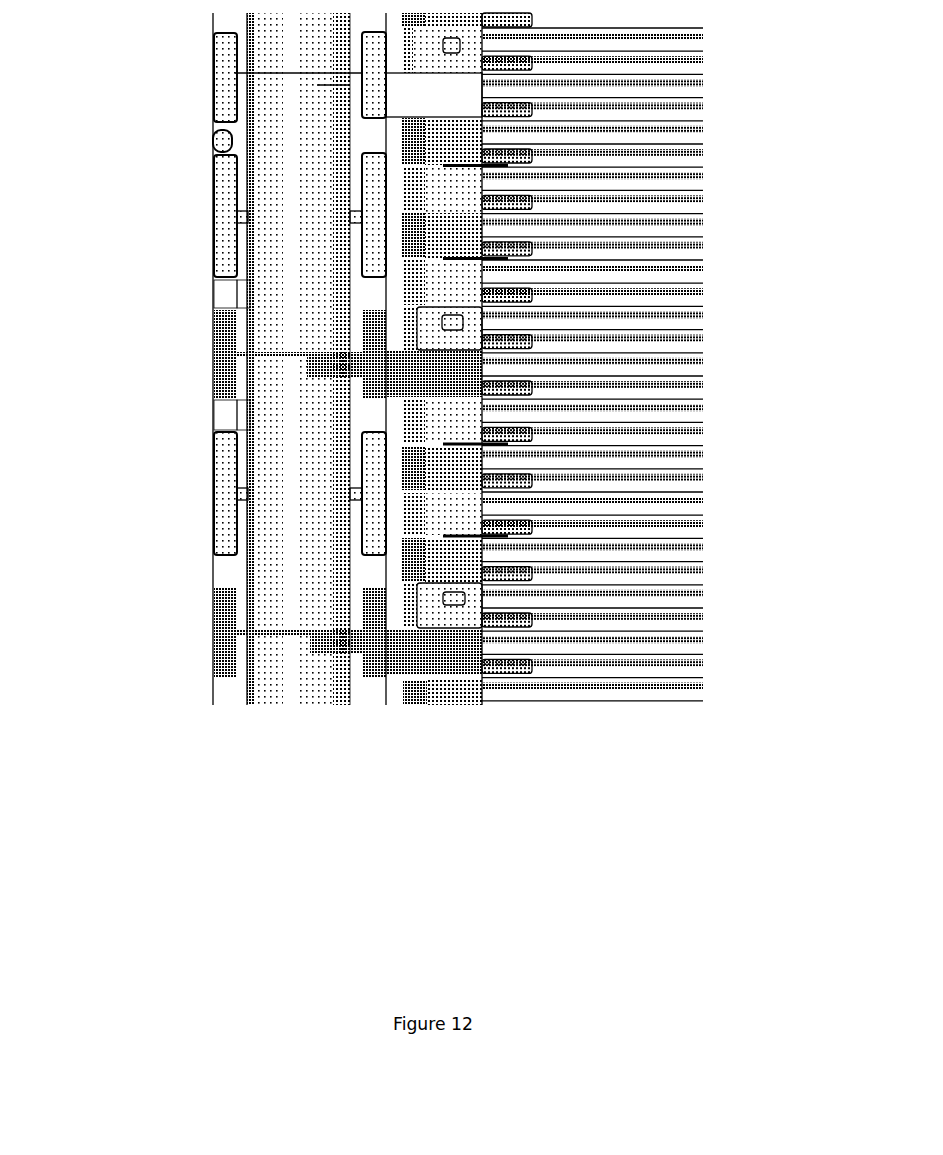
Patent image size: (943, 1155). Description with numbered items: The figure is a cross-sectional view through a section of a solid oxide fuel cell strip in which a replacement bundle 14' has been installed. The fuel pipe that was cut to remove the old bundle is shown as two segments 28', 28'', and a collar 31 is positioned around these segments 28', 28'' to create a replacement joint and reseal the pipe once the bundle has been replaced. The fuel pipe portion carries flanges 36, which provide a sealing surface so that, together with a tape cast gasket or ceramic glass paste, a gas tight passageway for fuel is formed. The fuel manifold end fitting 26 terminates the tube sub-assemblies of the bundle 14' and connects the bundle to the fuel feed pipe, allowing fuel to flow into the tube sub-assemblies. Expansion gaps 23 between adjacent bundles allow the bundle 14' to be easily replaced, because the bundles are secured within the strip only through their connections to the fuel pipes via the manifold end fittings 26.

The collar 31 is at (213, 223).
The flanges 36 is at (213, 303).
The segment 28'' is at (157, 266).
The segment 28' is at (137, 443).
The fuel manifold end fitting 26 is at (213, 355).
The expansion gaps 23 is at (618, 469).
The replacement bundle 14' is at (629, 357).